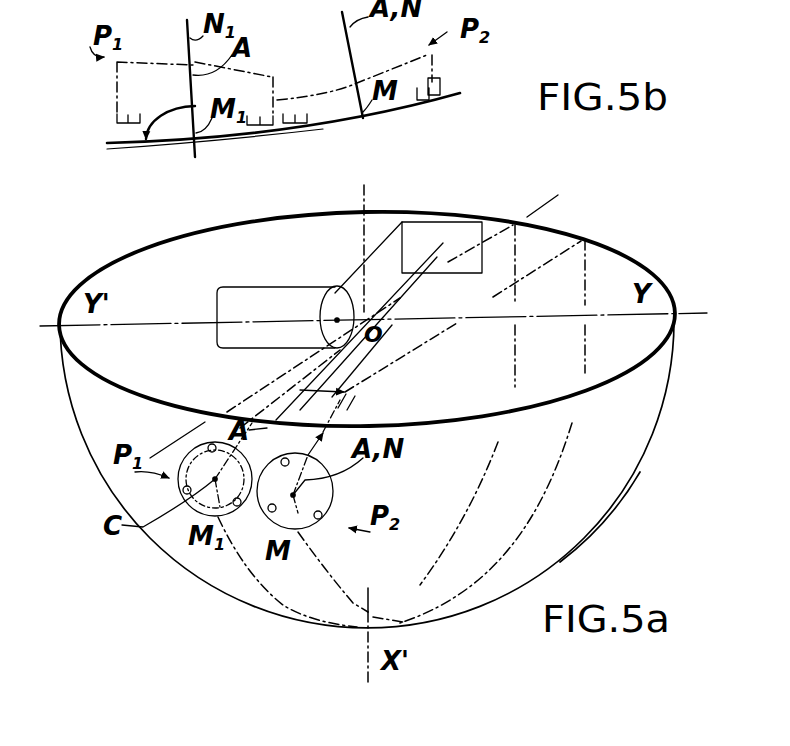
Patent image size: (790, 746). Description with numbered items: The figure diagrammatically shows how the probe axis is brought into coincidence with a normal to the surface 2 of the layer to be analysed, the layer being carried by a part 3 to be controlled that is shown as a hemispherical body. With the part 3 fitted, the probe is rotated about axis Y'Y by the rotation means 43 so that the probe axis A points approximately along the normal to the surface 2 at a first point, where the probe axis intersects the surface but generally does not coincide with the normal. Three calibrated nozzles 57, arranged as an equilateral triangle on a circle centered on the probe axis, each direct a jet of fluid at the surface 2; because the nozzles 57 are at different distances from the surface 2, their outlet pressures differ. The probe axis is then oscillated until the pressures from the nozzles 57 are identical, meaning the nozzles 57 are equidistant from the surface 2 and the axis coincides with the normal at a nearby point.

In FIG. 5b, the surface 2 is at (428, 98).
In FIG. 5a, the surface 2 is at (621, 374).
In FIG. 5a, the part to be controlled 3 is at (622, 534).
In FIG. 5a, the rotation means 43 is at (290, 288).
In FIG. 5b, the calibrated nozzles 57 is at (121, 128).
In FIG. 5a, the calibrated nozzles 57 is at (186, 486).